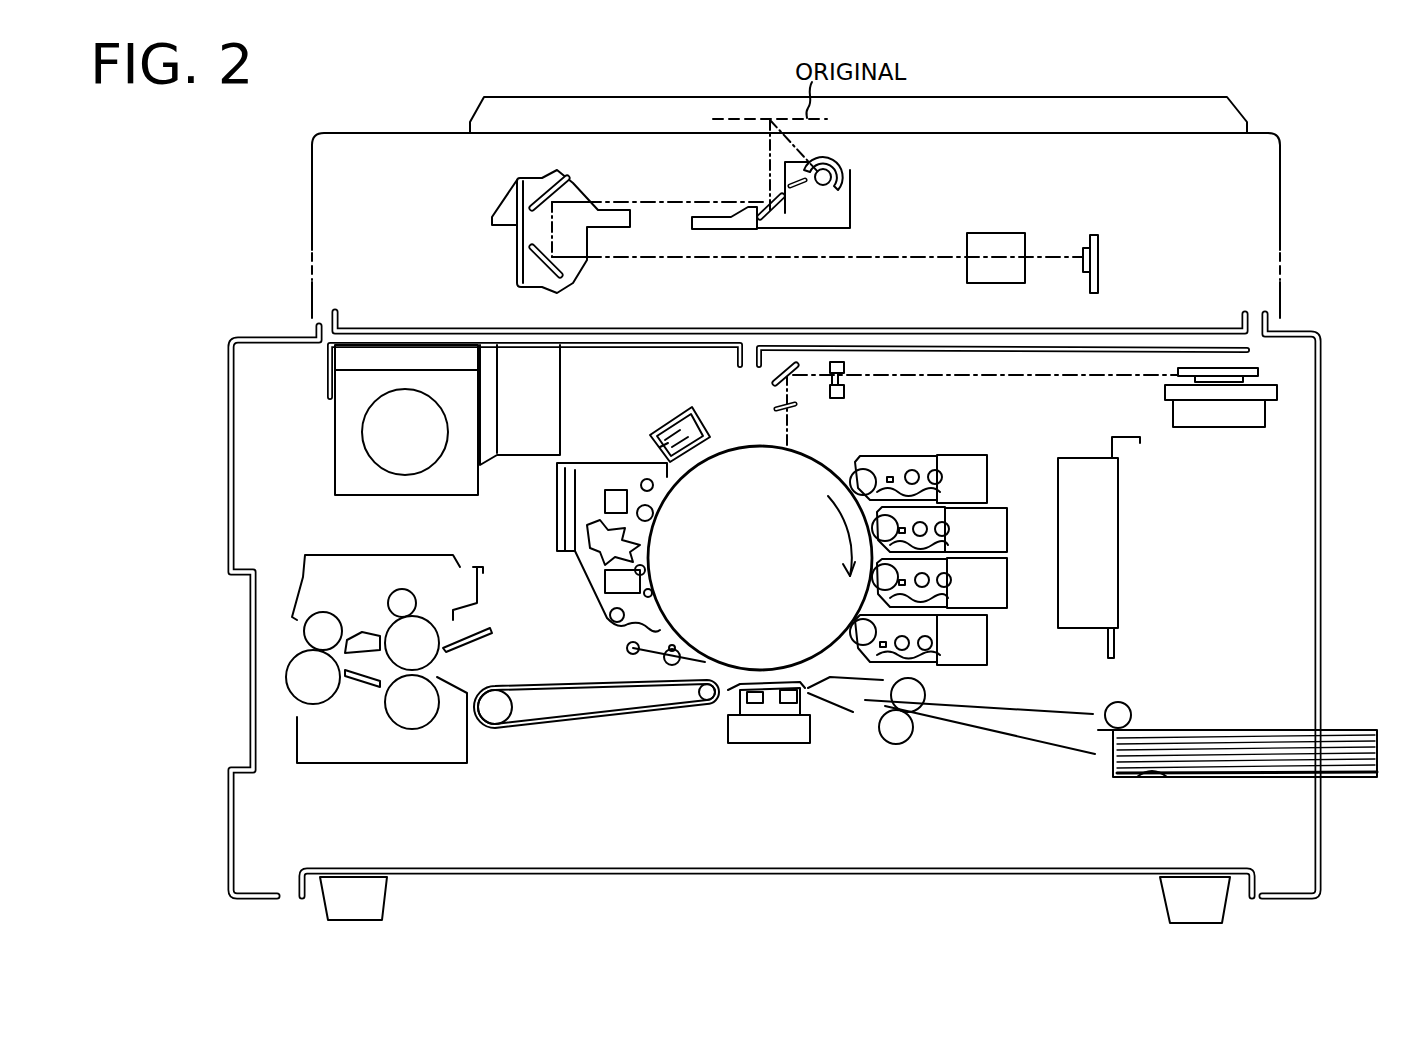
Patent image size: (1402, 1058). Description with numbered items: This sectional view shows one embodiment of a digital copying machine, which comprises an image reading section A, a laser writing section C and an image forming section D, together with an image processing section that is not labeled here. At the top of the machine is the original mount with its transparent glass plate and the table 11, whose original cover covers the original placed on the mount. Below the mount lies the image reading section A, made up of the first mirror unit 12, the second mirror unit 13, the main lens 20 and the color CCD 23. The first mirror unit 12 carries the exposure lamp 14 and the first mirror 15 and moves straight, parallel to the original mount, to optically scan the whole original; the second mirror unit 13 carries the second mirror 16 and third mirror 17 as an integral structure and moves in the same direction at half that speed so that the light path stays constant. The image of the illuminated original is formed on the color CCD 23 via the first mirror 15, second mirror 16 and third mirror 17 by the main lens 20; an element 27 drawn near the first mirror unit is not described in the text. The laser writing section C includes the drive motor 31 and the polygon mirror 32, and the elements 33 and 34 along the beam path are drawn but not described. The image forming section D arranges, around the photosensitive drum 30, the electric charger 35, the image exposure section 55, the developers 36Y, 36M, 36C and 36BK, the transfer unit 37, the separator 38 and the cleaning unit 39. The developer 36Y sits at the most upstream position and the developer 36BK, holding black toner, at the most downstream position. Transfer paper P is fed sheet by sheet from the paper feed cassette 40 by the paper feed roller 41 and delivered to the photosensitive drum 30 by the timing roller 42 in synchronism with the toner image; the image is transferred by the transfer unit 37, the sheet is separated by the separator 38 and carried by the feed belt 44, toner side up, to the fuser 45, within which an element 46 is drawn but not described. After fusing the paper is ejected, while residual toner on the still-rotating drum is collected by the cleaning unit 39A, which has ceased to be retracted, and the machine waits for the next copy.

The table 11 is at (1085, 118).
The image reading section A is at (347, 167).
The first mirror unit 12 is at (812, 191).
The second mirror unit 13 is at (543, 226).
The exposure lamp 14 is at (850, 170).
The first mirror 15 is at (750, 213).
The second mirror 16 is at (570, 175).
The third mirror 17 is at (570, 277).
The main lens 20 is at (990, 232).
The color CCD 23 is at (1080, 245).
The reflecting mirror 27 is at (780, 190).
The laser writing section C is at (1078, 372).
The image forming section D is at (733, 402).
The photosensitive drum 30 is at (810, 453).
The drive motor 31 is at (1218, 428).
The polygon mirror 32 is at (1180, 370).
The cylindrical lens 33 is at (847, 382).
The reflection mirror 34 is at (783, 357).
The electric charger 35 is at (677, 407).
The image exposure section 55 is at (780, 445).
The developer 36Y is at (987, 423).
The developer 36M is at (1003, 505).
The developer 36C is at (1007, 593).
The developer 36BK is at (987, 657).
The transfer unit 37 is at (803, 690).
The separator 38 is at (732, 707).
The cleaning unit 39 is at (660, 524).
The cleaning unit 39A is at (650, 540).
The paper feed cassette 40 is at (1237, 715).
The transfer paper P is at (1205, 753).
The paper feed roller 41 is at (1123, 702).
The timing roller 42 is at (903, 745).
The feed belt 44 is at (600, 723).
The fuser 45 is at (340, 630).
The fixing roller 46 is at (286, 672).